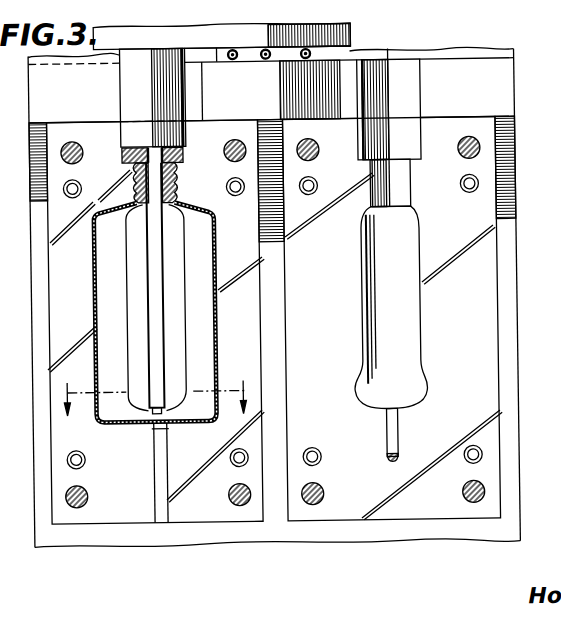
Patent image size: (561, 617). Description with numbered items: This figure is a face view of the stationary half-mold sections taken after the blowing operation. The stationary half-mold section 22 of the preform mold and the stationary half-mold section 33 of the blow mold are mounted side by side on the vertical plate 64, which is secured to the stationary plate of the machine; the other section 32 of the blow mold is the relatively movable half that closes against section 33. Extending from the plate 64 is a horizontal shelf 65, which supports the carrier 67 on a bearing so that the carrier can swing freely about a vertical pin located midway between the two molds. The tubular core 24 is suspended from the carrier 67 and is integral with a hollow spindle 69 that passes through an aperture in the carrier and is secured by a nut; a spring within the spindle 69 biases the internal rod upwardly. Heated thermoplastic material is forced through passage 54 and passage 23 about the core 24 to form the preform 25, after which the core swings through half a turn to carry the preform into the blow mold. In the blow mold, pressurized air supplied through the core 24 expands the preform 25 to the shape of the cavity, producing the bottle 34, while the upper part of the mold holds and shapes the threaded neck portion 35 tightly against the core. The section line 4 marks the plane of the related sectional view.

The half-mold section 33 is at (109, 561).
The plate 64 is at (288, 553).
The carrier 67 is at (354, 27).
The horizontal shelf 65 is at (505, 75).
The half-mold section 32 is at (560, 219).
The half-mold section 22 is at (488, 309).
The hollow spindle 69 is at (136, 88).
The neck portion 35 is at (179, 181).
The tubular core 24 is at (164, 260).
The preform 25 is at (127, 286).
The bottle 34 is at (211, 351).
The section line 4- 4 is at (156, 387).
The passage 23 is at (385, 426).
The passage 54 is at (388, 464).